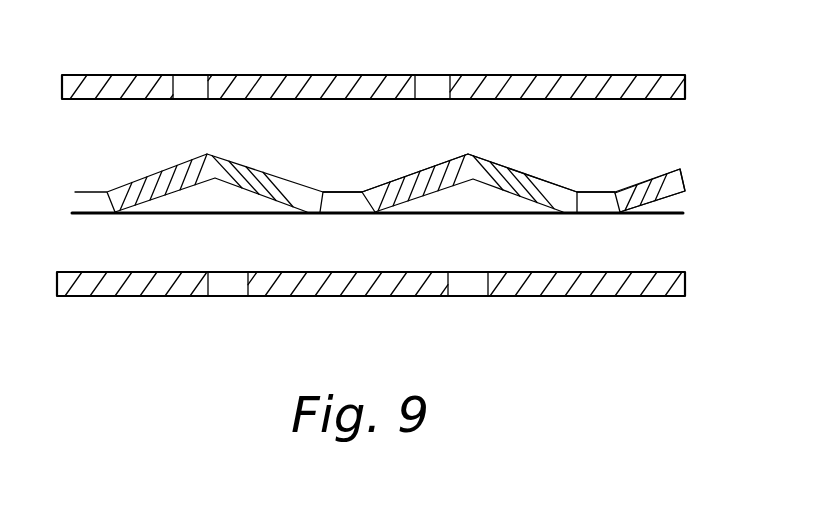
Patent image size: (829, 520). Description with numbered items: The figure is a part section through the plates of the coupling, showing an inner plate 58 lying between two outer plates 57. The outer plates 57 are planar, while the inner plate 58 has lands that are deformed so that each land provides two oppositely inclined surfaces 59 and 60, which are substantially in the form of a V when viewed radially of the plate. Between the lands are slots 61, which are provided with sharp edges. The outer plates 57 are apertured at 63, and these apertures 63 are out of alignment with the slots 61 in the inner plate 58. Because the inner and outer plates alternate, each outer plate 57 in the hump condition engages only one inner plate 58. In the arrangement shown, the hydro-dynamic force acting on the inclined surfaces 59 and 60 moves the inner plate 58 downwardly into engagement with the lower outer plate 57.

The outer plate 57 is at (635, 82).
The inner plate 58 is at (680, 179).
The inclined surface 59 is at (533, 177).
The inclined surface 60 is at (408, 175).
The slot 61 is at (343, 217).
The aperture 63 is at (195, 75).